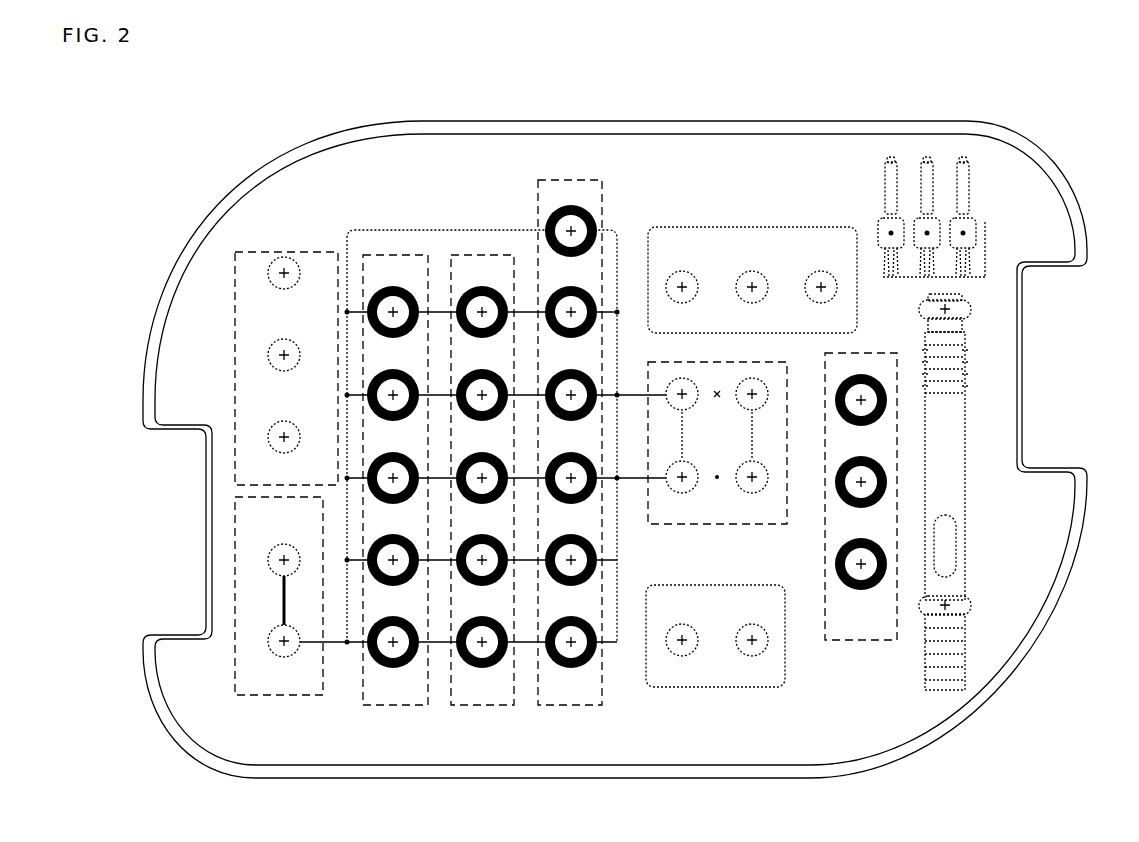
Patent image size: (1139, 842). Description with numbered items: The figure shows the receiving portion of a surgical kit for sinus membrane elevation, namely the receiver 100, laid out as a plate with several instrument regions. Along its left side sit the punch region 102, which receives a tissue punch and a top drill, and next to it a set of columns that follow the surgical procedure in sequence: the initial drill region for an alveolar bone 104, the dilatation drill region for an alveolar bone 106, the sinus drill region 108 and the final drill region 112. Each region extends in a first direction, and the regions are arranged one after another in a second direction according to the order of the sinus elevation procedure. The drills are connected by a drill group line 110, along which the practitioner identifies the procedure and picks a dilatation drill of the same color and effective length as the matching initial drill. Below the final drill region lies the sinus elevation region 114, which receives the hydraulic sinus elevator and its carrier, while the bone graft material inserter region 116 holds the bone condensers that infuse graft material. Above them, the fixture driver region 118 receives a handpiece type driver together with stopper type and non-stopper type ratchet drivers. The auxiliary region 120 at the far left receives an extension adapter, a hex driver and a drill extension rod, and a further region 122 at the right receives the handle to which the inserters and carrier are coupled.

The receiver 100 is at (944, 84).
The punch region 102 is at (235, 576).
The initial drill region for an alveolar bone 104 is at (393, 705).
The dilatation drill region for an alveolar bone 106 is at (482, 705).
The sinus drill region 108 is at (571, 705).
The drill group line 110 is at (617, 642).
The final drill region 112 is at (700, 524).
The sinus elevation region 114 is at (771, 687).
The bone graft material inserter region 116 is at (852, 640).
The fixture driver region 118 is at (748, 227).
The auxiliary region 120 is at (235, 350).
The region receiving a handle 122 is at (965, 410).